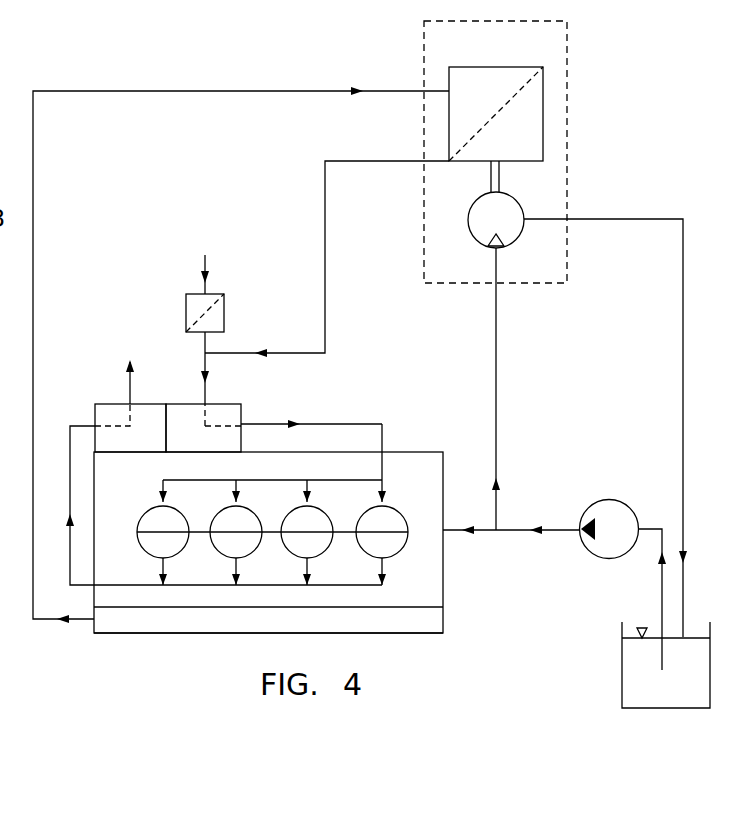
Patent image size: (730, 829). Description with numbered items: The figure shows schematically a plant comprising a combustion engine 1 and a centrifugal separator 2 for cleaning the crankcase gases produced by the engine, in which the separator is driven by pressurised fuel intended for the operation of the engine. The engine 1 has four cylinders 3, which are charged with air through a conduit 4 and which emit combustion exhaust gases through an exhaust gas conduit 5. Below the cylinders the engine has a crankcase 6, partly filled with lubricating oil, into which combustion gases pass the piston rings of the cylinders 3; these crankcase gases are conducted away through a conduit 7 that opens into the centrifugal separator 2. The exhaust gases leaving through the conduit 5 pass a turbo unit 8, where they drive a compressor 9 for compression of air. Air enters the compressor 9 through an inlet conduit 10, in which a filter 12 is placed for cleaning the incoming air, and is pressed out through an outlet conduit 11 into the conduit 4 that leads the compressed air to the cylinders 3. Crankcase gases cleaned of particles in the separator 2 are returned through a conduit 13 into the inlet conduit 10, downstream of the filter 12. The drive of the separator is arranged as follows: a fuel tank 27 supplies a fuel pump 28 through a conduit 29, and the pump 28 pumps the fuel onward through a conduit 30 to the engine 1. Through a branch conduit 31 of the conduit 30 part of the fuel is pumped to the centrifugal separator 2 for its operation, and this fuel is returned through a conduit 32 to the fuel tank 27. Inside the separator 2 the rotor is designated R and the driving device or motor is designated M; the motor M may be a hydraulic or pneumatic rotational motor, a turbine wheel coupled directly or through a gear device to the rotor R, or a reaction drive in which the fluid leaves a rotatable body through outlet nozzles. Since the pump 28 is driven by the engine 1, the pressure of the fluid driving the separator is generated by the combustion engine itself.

The combustion engine 1 is at (432, 432).
The centrifugal separator 2 is at (503, 172).
The cylinders 3 is at (392, 538).
The conduit 4 is at (382, 467).
The exhaust gas conduit 5 is at (70, 472).
The crankcase 6 is at (247, 623).
The conduit 7 is at (33, 605).
The turbo unit 8 is at (111, 412).
The compressor 9 is at (223, 410).
The inlet conduit 10 is at (205, 262).
The outlet conduit 11 is at (314, 422).
The filter 12 is at (193, 307).
The conduit 13 is at (325, 190).
The fuel tank 27 is at (641, 685).
The fuel pump 28 is at (608, 512).
The conduit 29 is at (653, 529).
The conduit 30 is at (508, 531).
The branch conduit 31 is at (496, 378).
The conduit 32 is at (683, 398).
The rotor R is at (532, 120).
The driving device or motor M is at (508, 225).